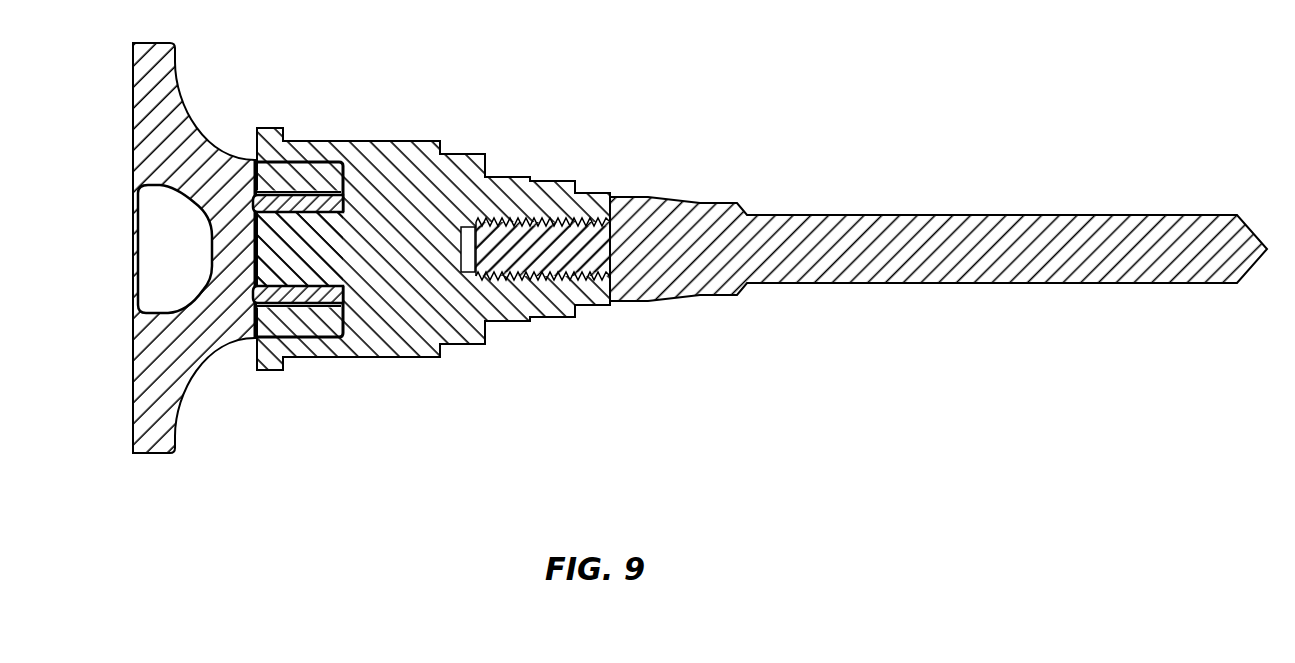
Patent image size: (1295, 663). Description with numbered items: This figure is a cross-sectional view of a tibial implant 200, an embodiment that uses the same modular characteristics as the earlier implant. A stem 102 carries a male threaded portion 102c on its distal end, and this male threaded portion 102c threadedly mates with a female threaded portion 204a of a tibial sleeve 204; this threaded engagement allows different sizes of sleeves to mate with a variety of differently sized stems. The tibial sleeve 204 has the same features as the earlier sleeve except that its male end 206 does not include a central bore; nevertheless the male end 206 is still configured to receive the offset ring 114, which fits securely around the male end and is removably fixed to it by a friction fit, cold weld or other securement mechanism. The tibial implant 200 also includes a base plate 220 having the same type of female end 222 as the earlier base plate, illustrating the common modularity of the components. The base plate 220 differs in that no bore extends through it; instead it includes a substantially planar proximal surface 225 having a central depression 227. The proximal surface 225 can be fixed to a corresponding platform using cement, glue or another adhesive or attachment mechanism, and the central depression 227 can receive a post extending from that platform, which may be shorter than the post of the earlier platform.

The stem 102 is at (910, 243).
The male threaded portion 102c is at (578, 260).
The ring 114 is at (329, 297).
The tibial implant 200 is at (666, 288).
The tibial sleeve 204 is at (387, 338).
The female threaded portion 204a is at (510, 280).
The male end 206 is at (312, 247).
The base plate 220 is at (160, 400).
The female end 222 is at (315, 328).
The proximal surface 225 is at (133, 420).
The central depression 227 is at (174, 206).